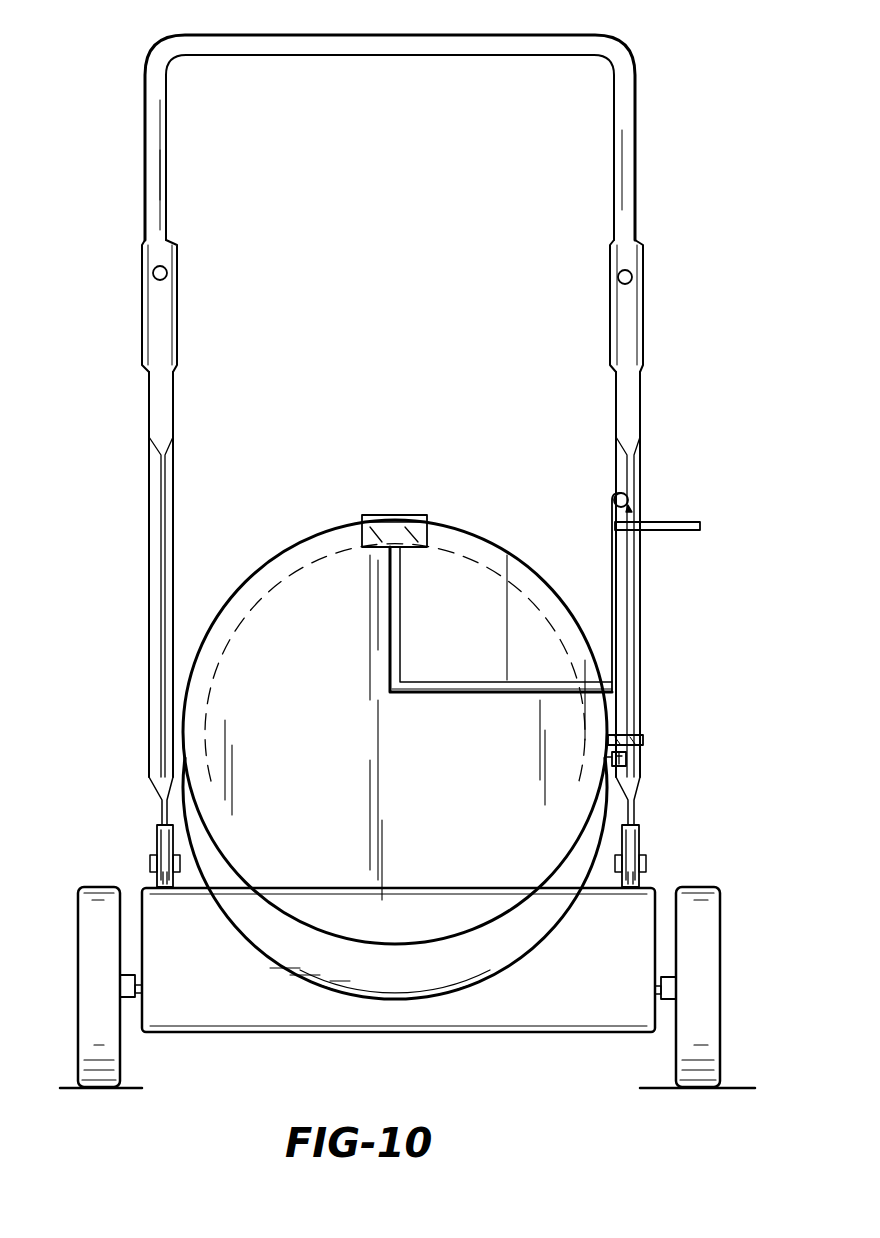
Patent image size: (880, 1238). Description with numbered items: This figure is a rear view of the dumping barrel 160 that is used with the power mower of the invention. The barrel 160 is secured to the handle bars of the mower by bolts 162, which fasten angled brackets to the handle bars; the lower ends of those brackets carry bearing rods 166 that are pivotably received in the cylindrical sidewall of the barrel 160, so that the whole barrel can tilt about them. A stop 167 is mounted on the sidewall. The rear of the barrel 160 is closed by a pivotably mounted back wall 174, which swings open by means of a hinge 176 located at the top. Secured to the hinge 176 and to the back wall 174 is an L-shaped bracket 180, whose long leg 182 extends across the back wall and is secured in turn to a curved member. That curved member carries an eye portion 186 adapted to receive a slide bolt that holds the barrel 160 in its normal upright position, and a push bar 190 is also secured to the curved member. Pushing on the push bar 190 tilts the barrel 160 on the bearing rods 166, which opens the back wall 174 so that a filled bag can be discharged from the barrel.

The dumping barrel 160 is at (303, 498).
The bolts 162 is at (153, 272).
The bearing rods 166 is at (632, 758).
The stop 167 is at (626, 742).
The back wall 174 is at (346, 775).
The hinge 176 is at (399, 530).
The L-shaped bracket 180 is at (397, 607).
The long leg 182 is at (485, 690).
The eye portion 186 is at (612, 496).
The push bar 190 is at (672, 525).